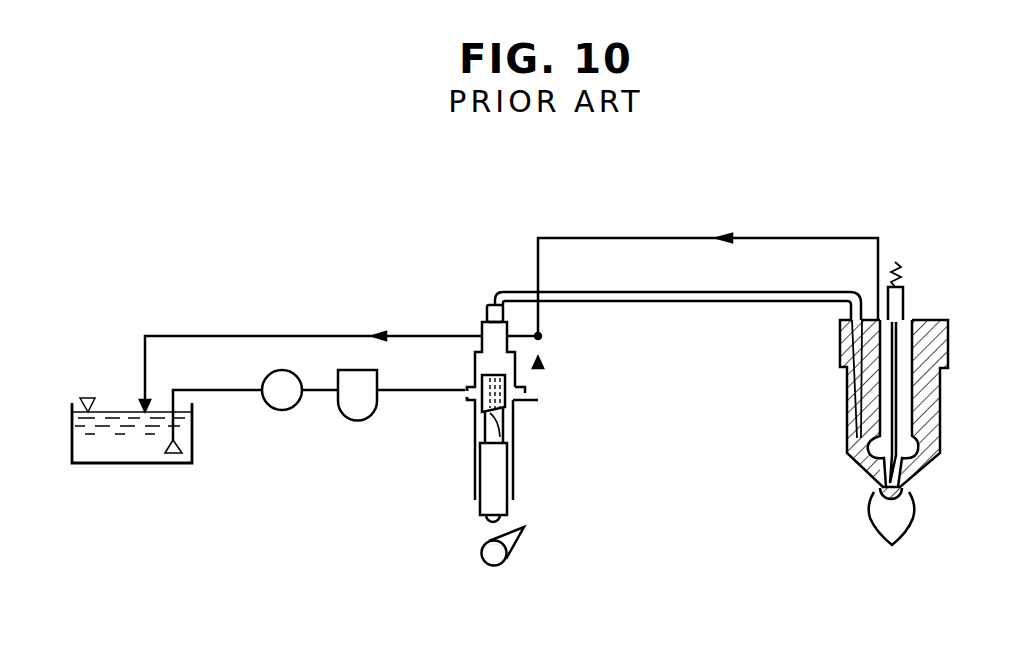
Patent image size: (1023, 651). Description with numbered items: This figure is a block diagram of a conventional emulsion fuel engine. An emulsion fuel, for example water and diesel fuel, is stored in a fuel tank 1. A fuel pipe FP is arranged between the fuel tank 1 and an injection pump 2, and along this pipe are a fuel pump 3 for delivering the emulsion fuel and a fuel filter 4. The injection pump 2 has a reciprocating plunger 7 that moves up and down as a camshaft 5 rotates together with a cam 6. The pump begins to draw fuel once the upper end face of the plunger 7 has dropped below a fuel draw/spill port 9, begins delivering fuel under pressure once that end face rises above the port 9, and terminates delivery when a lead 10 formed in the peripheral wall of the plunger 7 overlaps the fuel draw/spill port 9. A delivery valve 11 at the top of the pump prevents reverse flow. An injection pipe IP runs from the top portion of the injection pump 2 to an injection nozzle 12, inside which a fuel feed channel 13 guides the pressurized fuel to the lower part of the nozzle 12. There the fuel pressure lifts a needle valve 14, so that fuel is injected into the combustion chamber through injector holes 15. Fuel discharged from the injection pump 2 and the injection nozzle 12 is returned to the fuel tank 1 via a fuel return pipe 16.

The fuel tank 1 is at (122, 466).
The injection pump 2 is at (470, 484).
The fuel pump 3 is at (282, 410).
The fuel filter 4 is at (358, 420).
The camshaft 5 is at (493, 566).
The cam 6 is at (518, 543).
The plunger 7 is at (500, 473).
The fuel draw/spill port 9 is at (523, 387).
The lead 10 is at (502, 422).
The delivery valve 11 is at (483, 313).
The injection nozzle 12 is at (940, 430).
The fuel feed channel 13 is at (847, 413).
The needle valve 14 is at (908, 357).
The injector holes 15 is at (892, 532).
The fuel return pipe 16 is at (298, 335).
The fuel pipe FP is at (422, 393).
The injection pipe IP is at (680, 303).